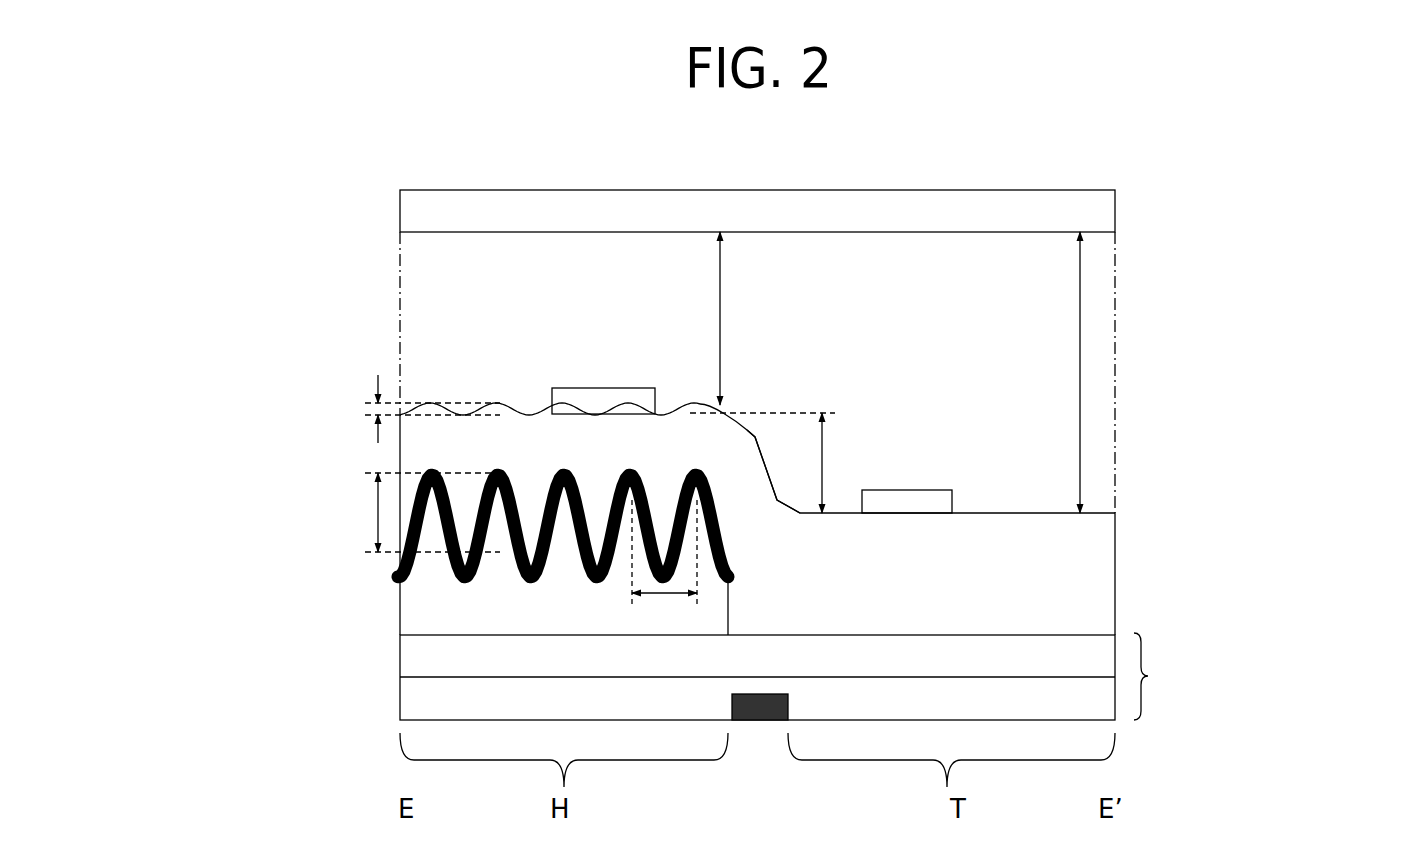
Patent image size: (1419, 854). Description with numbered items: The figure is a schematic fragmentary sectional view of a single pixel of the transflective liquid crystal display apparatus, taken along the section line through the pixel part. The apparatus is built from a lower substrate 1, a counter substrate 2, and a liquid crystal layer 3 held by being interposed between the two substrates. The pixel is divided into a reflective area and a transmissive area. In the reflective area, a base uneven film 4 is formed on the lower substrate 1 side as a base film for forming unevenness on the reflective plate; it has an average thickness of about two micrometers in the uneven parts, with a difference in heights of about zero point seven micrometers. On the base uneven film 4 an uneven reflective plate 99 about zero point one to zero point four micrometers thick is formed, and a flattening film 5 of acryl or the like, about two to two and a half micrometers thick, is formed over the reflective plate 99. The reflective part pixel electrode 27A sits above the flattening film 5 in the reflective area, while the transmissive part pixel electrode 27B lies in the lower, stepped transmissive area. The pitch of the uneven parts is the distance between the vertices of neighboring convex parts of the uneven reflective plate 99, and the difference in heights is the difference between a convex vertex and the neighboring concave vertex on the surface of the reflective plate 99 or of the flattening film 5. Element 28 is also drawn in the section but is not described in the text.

The lower substrate 1 is at (787, 676).
The counter substrate 2 is at (1100, 210).
The liquid crystal layer 3 is at (432, 291).
The base uneven film 4 is at (432, 606).
The flattening film 5 is at (435, 450).
The reflective part pixel electrode 27A is at (597, 404).
The transmissive part pixel electrode 27B is at (955, 500).
The gate line 28 is at (750, 722).
The uneven reflective plate 99 is at (716, 497).